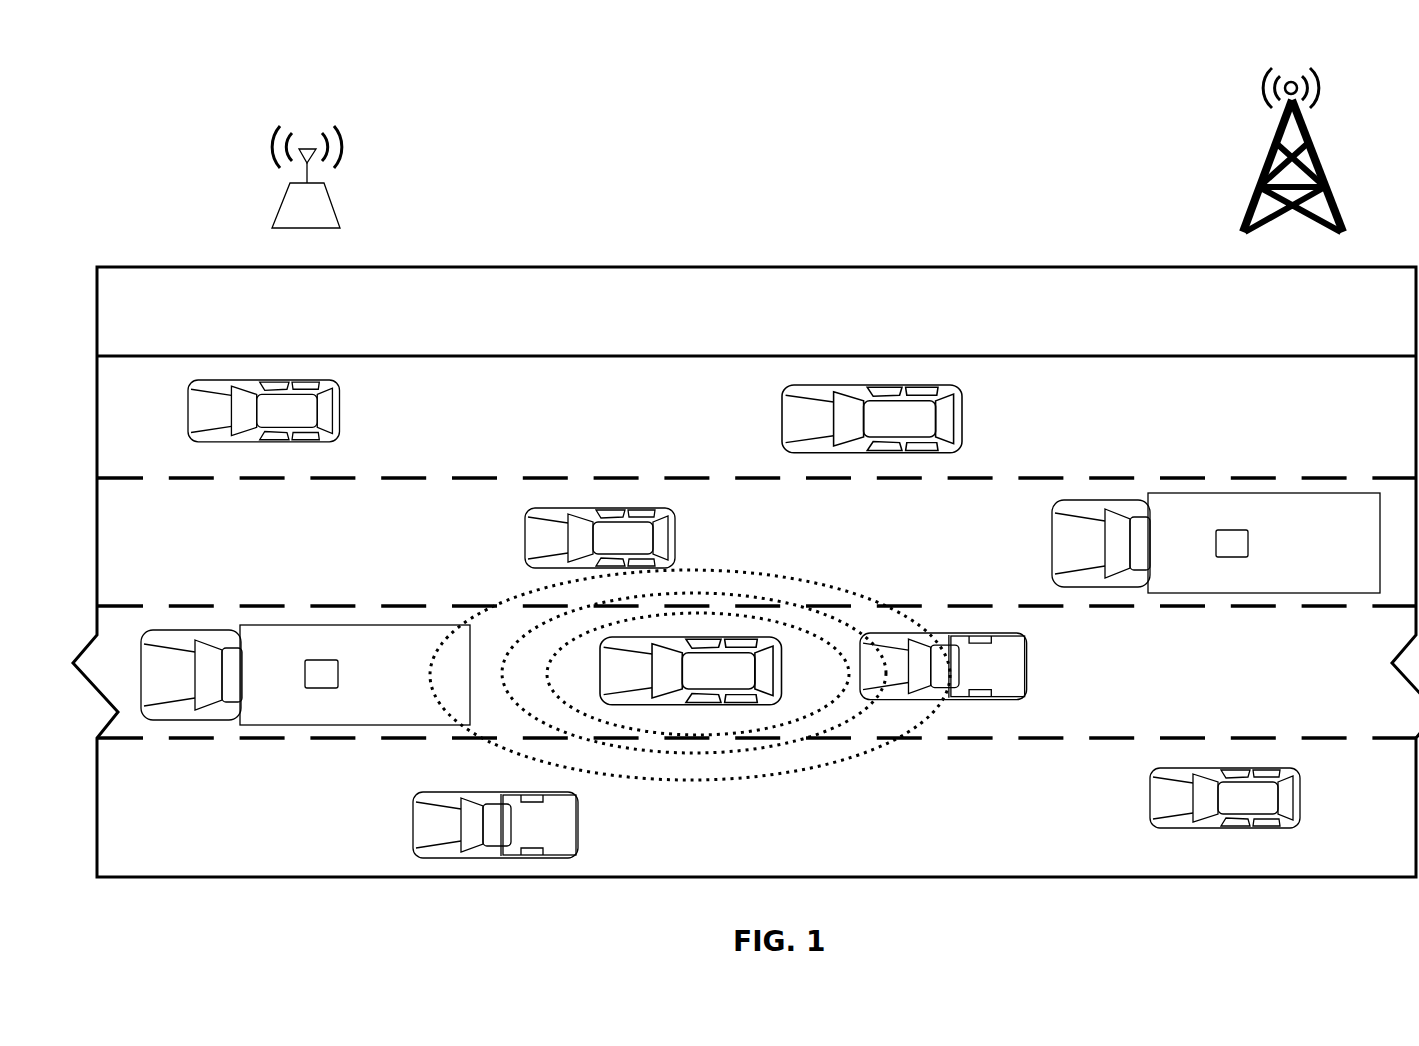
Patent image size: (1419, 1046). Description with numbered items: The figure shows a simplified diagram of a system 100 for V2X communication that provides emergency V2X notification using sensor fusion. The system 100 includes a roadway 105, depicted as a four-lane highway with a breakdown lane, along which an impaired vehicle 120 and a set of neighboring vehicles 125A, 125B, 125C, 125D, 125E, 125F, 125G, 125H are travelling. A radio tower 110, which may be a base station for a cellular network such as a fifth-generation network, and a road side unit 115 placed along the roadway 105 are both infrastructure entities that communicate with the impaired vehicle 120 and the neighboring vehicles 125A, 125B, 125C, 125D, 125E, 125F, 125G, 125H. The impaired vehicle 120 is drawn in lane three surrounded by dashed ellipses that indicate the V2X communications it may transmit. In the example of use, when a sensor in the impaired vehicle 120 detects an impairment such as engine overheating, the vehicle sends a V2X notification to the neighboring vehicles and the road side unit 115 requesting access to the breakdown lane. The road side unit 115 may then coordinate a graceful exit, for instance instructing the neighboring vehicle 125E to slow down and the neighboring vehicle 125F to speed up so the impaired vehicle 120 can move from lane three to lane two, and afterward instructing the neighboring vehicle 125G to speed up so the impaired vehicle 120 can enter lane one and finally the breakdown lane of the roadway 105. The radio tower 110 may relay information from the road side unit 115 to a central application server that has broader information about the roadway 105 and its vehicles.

The system 100 is at (146, 205).
The roadway 105 is at (185, 880).
The radio tower 110 is at (1322, 176).
The road side unit 115 is at (330, 203).
The impaired vehicle 120 is at (783, 690).
The neighboring vehicle 125A is at (1300, 800).
The neighboring vehicle 125B is at (578, 830).
The neighboring vehicle 125C is at (1027, 665).
The neighboring vehicle 125D is at (367, 625).
The neighboring vehicle 125E is at (1050, 535).
The neighboring vehicle 125F is at (675, 527).
The neighboring vehicle 125G is at (962, 414).
The neighboring vehicle 125H is at (340, 417).